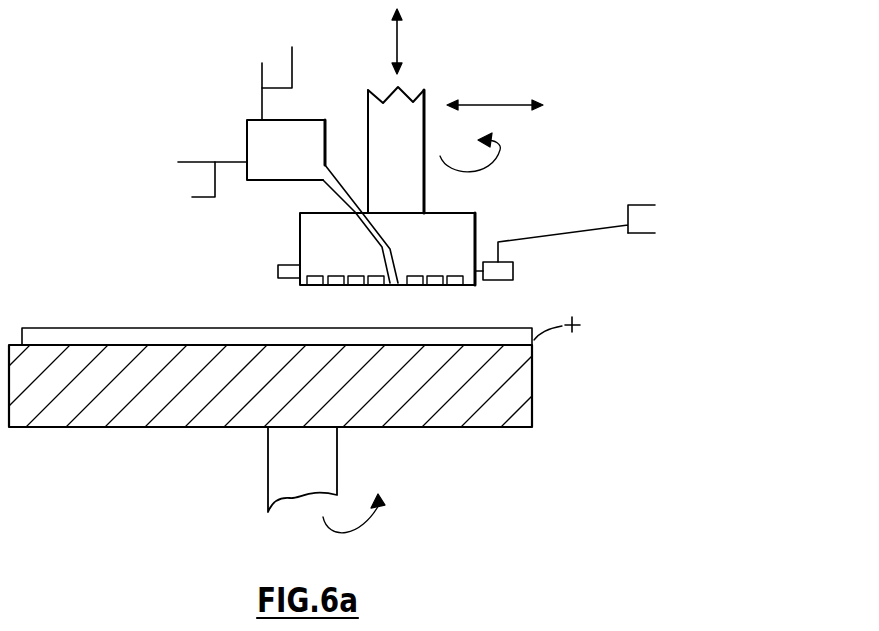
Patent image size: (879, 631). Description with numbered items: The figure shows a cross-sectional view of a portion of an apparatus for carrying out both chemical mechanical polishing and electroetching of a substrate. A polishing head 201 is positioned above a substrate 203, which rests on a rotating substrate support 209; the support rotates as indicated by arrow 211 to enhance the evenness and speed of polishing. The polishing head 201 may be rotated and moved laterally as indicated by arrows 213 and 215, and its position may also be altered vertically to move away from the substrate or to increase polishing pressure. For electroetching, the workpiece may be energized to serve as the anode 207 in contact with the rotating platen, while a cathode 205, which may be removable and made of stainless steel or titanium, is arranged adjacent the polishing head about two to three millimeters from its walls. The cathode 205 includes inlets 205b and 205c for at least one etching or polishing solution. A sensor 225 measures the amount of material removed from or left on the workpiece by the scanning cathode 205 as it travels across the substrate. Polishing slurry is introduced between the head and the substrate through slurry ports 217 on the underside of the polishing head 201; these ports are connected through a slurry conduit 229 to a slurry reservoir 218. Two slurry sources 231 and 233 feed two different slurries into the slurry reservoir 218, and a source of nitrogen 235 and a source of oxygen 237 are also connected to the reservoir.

The polishing head 201 is at (478, 212).
The substrate 203 is at (470, 328).
The cathode 205 is at (513, 268).
The inlet 205b is at (607, 224).
The inlet 205c is at (672, 233).
The anode 207 is at (533, 375).
The substrate support 209 is at (445, 427).
The arrow 211 is at (373, 525).
The arrow 213 is at (503, 155).
The arrow 215 is at (483, 104).
The slurry port 217 is at (390, 287).
The slurry reservoir 218 is at (286, 150).
The sensor 225 is at (278, 272).
The slurry conduit 229 is at (330, 168).
The slurry source 231 is at (191, 163).
The slurry source 233 is at (180, 187).
The source of nitrogen 235 is at (253, 77).
The source of oxygen 237 is at (292, 51).